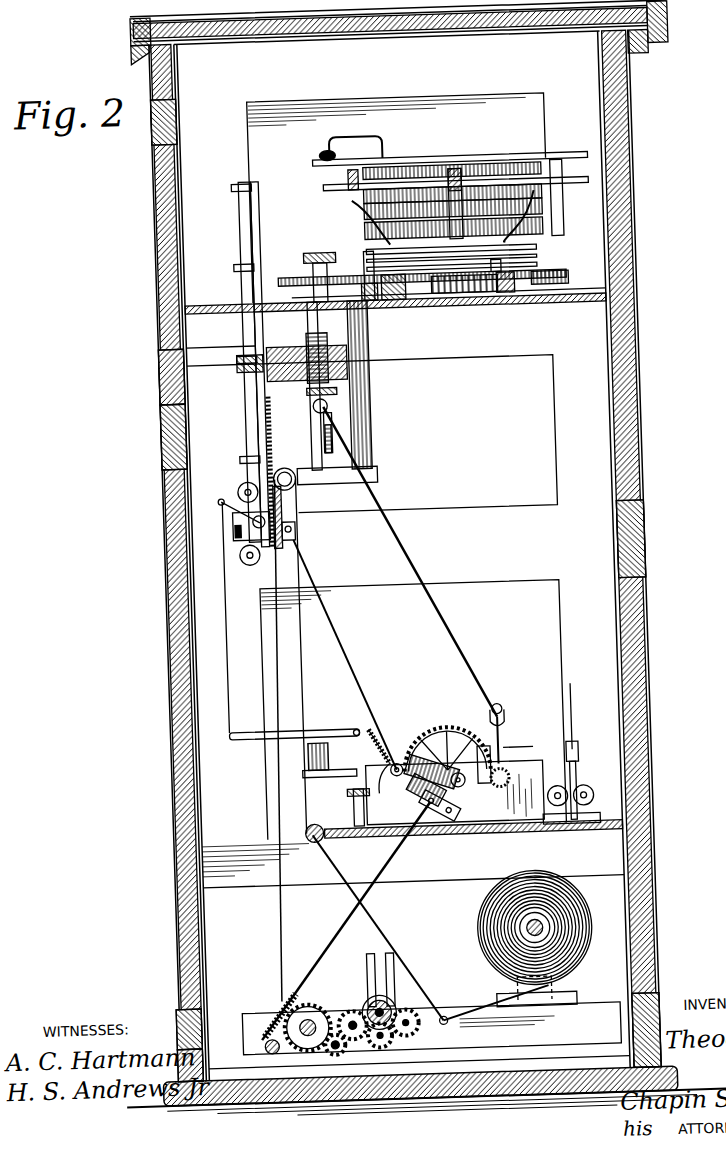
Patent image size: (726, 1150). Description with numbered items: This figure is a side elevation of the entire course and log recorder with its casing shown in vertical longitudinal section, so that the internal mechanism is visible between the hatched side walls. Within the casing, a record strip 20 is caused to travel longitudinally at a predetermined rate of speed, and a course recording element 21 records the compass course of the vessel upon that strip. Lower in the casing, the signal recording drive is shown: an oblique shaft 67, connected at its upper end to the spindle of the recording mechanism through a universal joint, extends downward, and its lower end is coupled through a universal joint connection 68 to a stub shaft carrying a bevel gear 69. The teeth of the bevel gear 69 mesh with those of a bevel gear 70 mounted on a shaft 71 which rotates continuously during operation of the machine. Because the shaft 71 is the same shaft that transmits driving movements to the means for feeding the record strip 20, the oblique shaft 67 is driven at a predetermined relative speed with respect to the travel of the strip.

The record strip 20 is at (269, 806).
The course recording element 21 is at (262, 391).
The oblique shaft 67 is at (375, 737).
The universal joint connection 68 is at (403, 767).
The bevel gear 69 is at (414, 770).
The bevel gear 70 is at (440, 802).
The shaft 71 is at (381, 860).